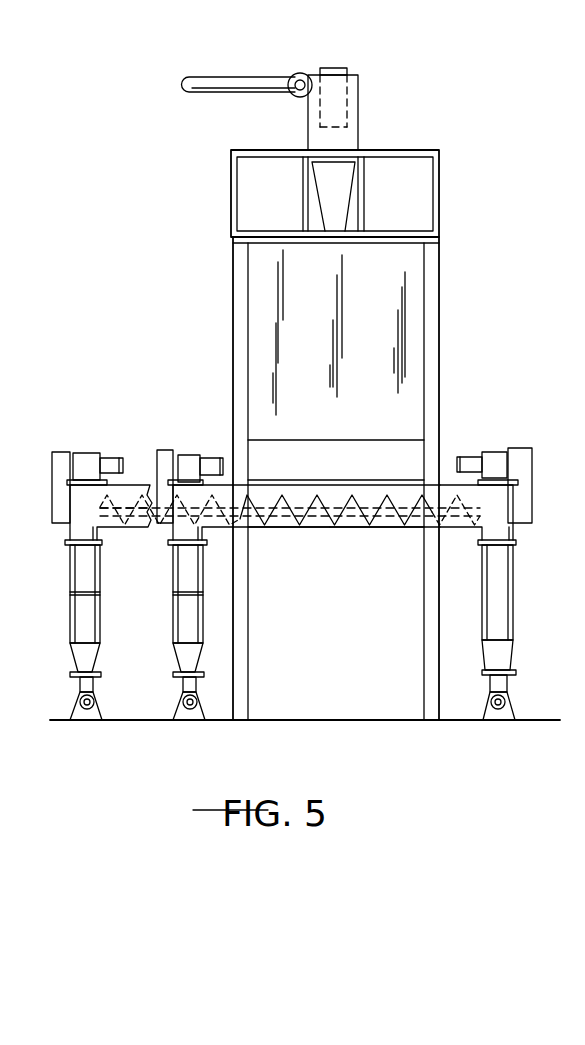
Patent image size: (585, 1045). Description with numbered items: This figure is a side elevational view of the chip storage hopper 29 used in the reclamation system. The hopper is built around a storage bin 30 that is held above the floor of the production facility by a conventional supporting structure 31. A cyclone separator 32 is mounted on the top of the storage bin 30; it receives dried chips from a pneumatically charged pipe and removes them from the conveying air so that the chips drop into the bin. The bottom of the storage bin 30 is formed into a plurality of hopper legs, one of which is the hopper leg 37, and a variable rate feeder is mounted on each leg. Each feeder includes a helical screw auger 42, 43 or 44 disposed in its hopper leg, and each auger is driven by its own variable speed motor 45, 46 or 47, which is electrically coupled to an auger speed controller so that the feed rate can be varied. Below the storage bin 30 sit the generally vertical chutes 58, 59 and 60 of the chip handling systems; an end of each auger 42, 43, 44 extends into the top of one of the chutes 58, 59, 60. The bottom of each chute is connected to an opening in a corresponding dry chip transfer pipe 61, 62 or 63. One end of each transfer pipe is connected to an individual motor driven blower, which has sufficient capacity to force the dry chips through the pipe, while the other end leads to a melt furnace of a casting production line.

The chip storage hopper 29 is at (466, 187).
The storage bin 30 is at (390, 332).
The supporting structure 31 is at (432, 455).
The cyclone separator 32 is at (360, 112).
The hopper leg 37 is at (300, 497).
The helical screw auger 42 is at (453, 527).
The helical screw auger 43 is at (110, 530).
The helical screw auger 44 is at (290, 530).
The variable speed motor 45 is at (490, 458).
The variable speed motor 46 is at (105, 475).
The variable speed motor 47 is at (165, 457).
The vertical chute 58 is at (513, 602).
The vertical chute 59 is at (78, 618).
The vertical chute 60 is at (185, 623).
The dry chip transfer pipe 61 is at (508, 702).
The dry chip transfer pipe 62 is at (255, 75).
The dry chip transfer pipe 63 is at (183, 700).